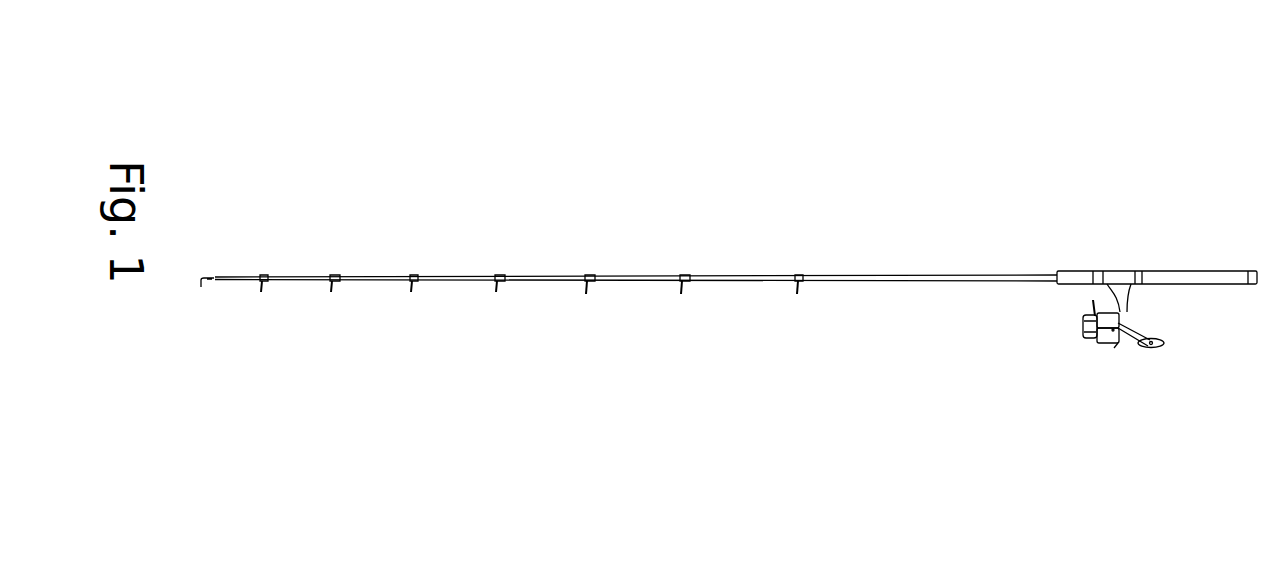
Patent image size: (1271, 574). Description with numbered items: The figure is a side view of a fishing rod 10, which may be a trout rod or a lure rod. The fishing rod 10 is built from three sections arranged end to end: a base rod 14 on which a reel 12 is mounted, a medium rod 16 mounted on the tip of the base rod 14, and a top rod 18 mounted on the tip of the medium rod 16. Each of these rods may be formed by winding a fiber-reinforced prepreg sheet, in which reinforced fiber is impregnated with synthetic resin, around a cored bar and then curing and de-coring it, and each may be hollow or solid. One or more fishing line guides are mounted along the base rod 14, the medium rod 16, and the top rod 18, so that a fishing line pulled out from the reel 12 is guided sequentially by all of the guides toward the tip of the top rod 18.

The fishing rod 10 is at (1062, 102).
The reel 12 is at (1121, 345).
The base rod 14 is at (1163, 275).
The medium rod 16 is at (717, 277).
The top rod 18 is at (447, 277).